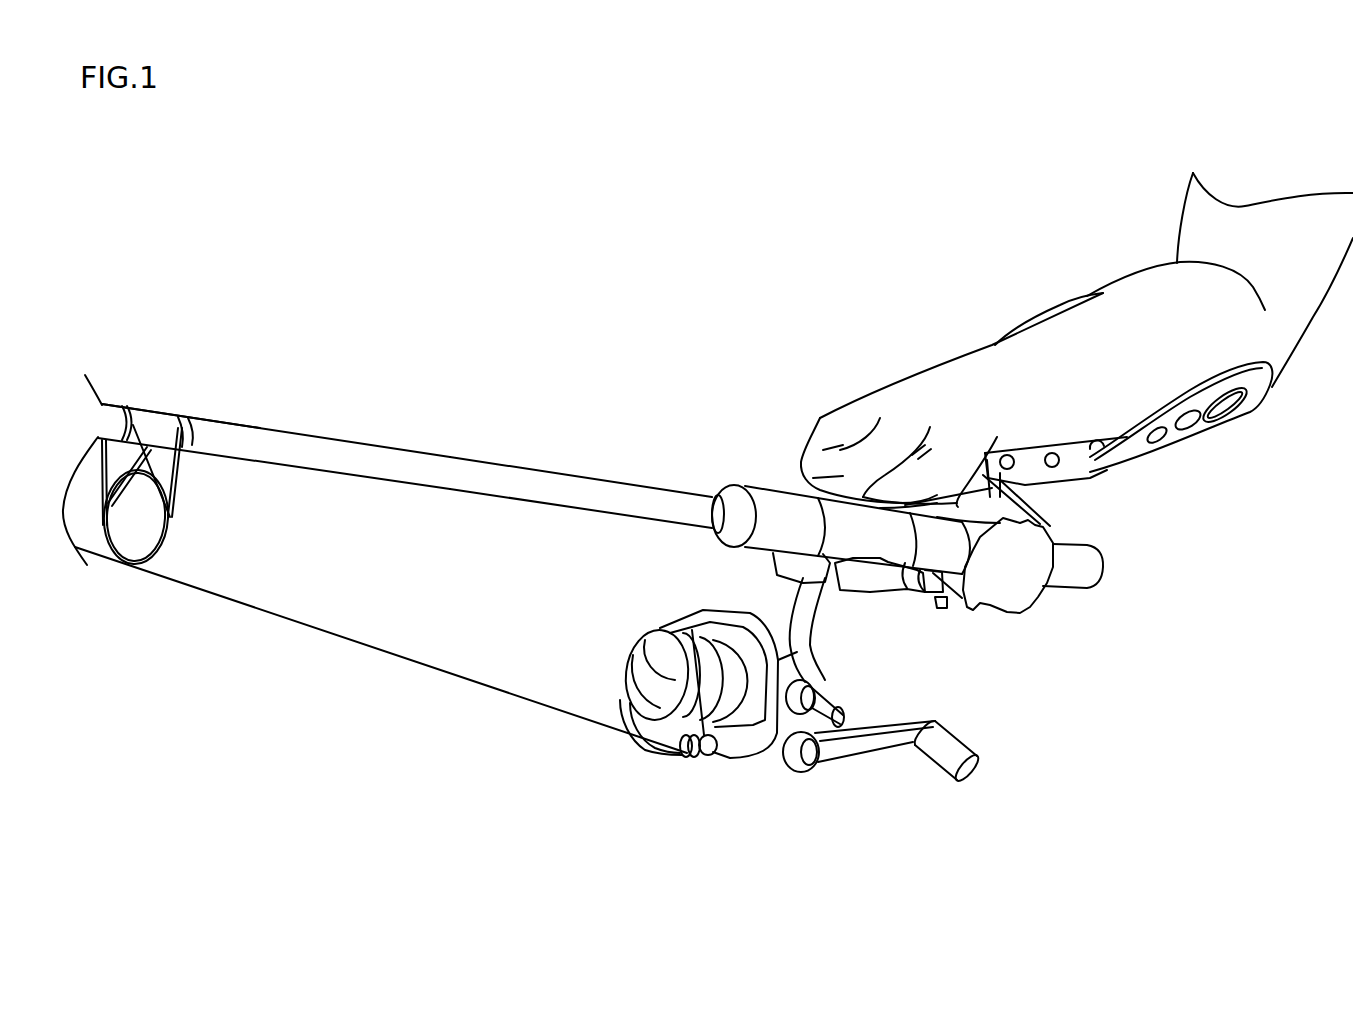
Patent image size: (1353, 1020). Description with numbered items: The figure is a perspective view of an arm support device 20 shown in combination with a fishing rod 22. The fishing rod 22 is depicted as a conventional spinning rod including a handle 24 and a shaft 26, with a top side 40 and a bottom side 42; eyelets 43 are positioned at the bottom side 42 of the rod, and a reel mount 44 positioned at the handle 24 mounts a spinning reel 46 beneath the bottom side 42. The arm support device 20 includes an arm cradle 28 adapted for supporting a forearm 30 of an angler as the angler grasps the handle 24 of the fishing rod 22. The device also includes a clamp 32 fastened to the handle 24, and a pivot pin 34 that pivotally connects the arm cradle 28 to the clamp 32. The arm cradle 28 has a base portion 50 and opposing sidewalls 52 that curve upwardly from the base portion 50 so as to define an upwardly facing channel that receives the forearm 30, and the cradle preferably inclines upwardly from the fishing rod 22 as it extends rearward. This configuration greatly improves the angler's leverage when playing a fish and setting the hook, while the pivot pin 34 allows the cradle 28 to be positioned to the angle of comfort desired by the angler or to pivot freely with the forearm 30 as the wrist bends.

The arm support device 20 is at (1208, 472).
The fishing rod 22 is at (413, 448).
The handle 24 is at (1073, 587).
The shaft 26 is at (252, 428).
The arm cradle 28 is at (1257, 413).
The forearm 30 is at (1142, 275).
The clamp 32 is at (962, 608).
The pivot pin 34 is at (940, 608).
The top side 40 is at (507, 470).
The bottom side 42 is at (477, 493).
The eyelets 43 is at (168, 532).
The reel mount 44 is at (835, 513).
The spinning reel 46 is at (832, 672).
The base portion 50 is at (1030, 467).
The sidewalls 52 is at (1038, 320).